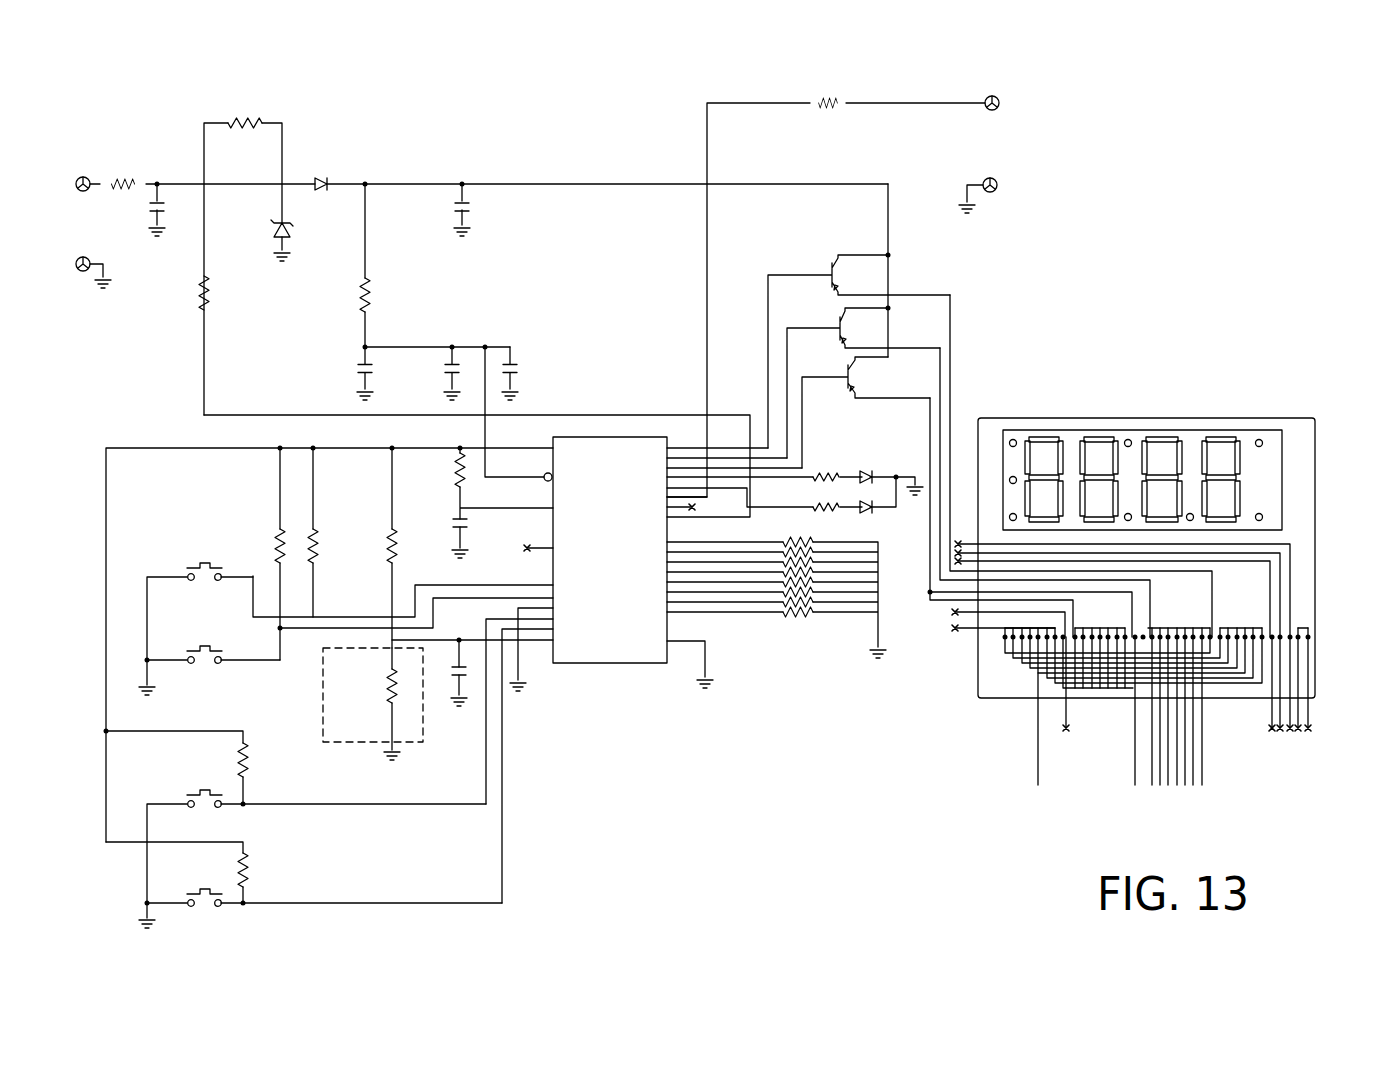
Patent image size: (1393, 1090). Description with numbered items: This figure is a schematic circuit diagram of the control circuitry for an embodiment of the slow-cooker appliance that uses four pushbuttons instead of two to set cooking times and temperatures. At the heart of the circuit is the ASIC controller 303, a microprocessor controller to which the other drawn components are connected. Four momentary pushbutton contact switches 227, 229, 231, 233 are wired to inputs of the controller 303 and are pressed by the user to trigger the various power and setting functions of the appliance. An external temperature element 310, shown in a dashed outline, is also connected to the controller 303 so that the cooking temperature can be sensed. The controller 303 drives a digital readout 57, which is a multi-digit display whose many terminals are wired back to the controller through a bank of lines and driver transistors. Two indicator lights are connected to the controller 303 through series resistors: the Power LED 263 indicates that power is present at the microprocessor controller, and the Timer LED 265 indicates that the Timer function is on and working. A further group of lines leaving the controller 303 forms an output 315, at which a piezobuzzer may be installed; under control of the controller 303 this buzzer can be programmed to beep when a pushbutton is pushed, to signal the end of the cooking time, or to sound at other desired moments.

The digital readout 57 is at (1300, 450).
The momentary pushbutton contact switch 227 is at (200, 601).
The momentary pushbutton contact switch 229 is at (209, 657).
The momentary pushbutton contact switch 231 is at (295, 816).
The momentary pushbutton contact switch 233 is at (302, 885).
The Power LED 263 is at (893, 470).
The Timer LED 265 is at (895, 522).
The ASIC controller 303 is at (627, 663).
The external temperature element 310 is at (423, 725).
The output 315 is at (840, 613).